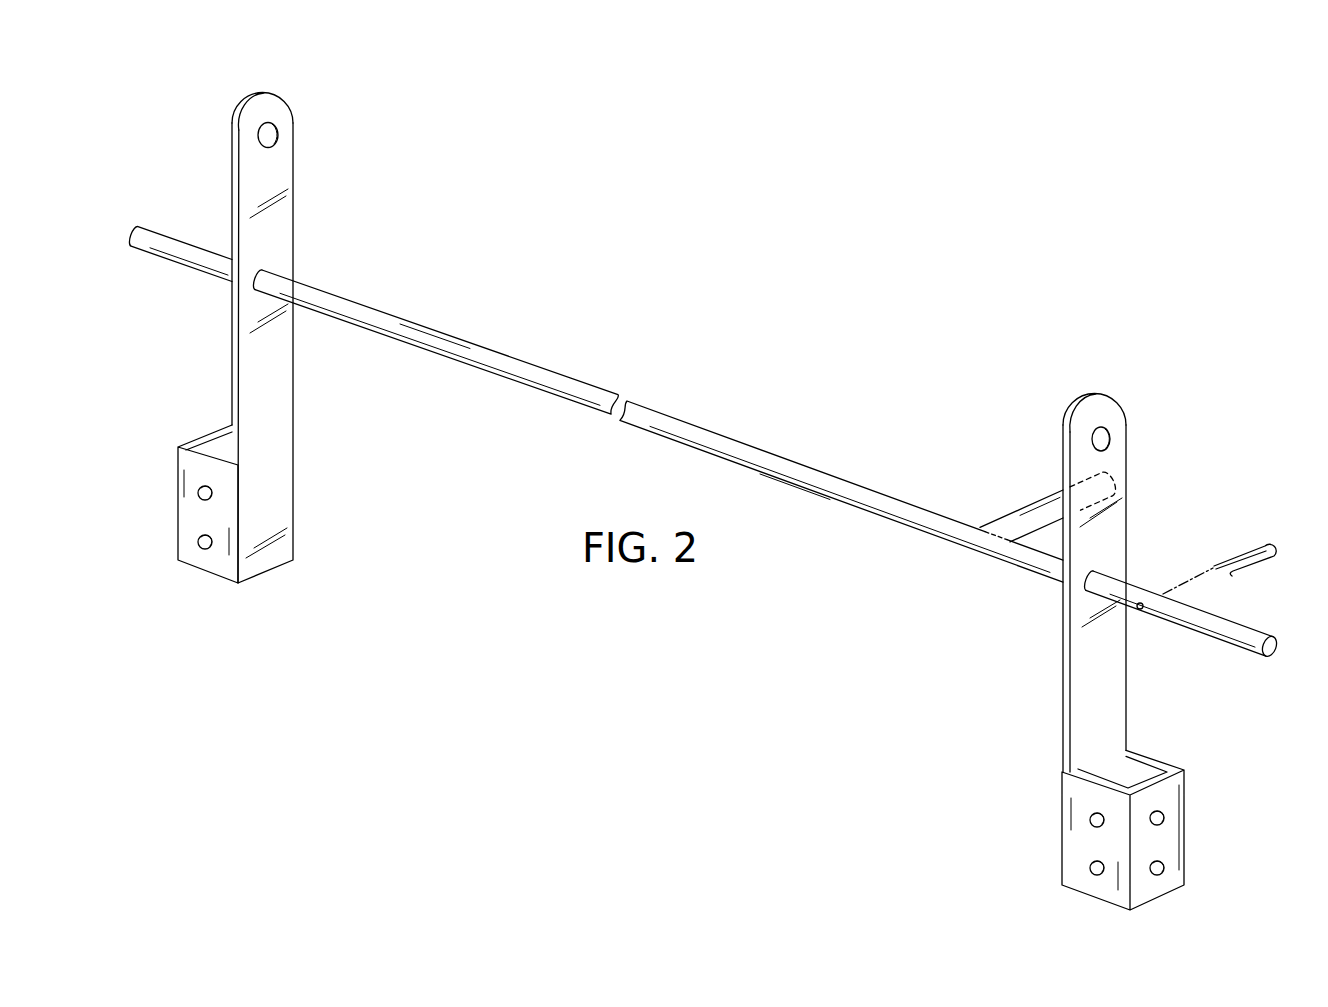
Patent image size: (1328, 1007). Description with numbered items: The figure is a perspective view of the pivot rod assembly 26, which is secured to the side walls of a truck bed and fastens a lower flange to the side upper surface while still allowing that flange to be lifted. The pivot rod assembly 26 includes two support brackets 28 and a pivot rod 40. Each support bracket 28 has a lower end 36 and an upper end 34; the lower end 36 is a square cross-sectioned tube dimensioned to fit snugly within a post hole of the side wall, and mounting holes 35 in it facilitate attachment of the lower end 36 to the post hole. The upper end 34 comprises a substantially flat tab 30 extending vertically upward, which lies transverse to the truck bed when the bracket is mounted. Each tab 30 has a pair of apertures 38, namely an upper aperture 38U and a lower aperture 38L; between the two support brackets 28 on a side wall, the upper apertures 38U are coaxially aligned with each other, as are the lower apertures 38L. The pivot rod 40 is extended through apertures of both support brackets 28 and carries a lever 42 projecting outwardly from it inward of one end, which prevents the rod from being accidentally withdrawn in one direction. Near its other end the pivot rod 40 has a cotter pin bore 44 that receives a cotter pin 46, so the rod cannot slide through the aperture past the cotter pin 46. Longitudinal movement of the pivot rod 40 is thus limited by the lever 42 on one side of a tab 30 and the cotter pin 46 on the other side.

The pivot rod assembly 26 is at (655, 221).
The support bracket 28 is at (280, 397).
The tab 30 is at (293, 213).
The upper end 34 is at (283, 98).
The mounting holes 35 is at (200, 490).
The lower end 36 is at (275, 480).
The apertures 38 is at (282, 135).
The upper aperture 38U is at (1140, 455).
The lower aperture 38L is at (272, 272).
The pivot rod 40 is at (827, 468).
The lever 42 is at (1050, 492).
The cotter pin bore 44 is at (1141, 610).
The cotter pin 46 is at (1255, 545).